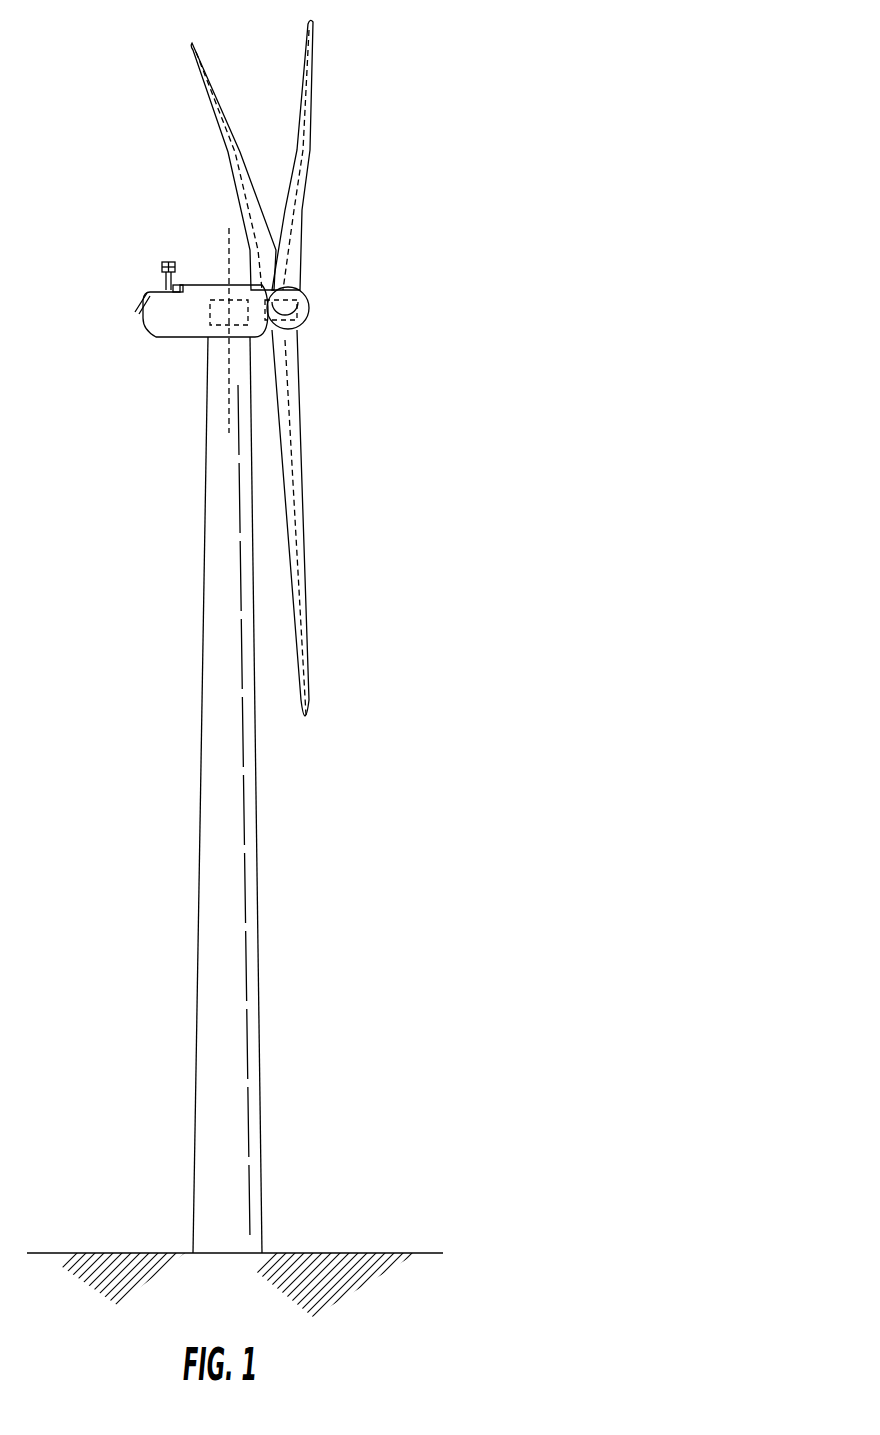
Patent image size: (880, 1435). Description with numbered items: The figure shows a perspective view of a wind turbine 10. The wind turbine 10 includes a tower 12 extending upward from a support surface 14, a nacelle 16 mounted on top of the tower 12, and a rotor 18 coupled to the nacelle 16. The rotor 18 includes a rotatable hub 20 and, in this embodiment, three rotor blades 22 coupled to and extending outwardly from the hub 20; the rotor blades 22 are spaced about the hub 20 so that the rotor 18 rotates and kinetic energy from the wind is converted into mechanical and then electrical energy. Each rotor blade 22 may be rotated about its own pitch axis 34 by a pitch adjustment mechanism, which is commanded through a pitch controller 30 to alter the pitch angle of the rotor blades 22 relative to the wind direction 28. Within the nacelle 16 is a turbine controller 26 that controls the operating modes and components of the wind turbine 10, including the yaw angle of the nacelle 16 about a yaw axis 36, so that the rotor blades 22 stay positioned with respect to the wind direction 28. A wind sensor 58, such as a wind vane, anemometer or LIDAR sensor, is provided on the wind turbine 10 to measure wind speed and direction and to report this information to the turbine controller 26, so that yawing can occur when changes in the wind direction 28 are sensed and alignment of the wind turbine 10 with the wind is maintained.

The wind turbine 10 is at (418, 108).
The tower 12 is at (212, 918).
The support surface 14 is at (111, 1253).
The nacelle 16 is at (180, 337).
The rotor 18 is at (283, 368).
The rotatable hub 20 is at (299, 297).
The rotor blade 22 is at (268, 368).
The turbine controller 26 is at (217, 285).
The wind direction 28 is at (484, 312).
The pitch controller 30 is at (300, 308).
The pitch axis 34 is at (228, 163).
The yaw axis 36 is at (227, 380).
The wind sensor 58 is at (163, 282).